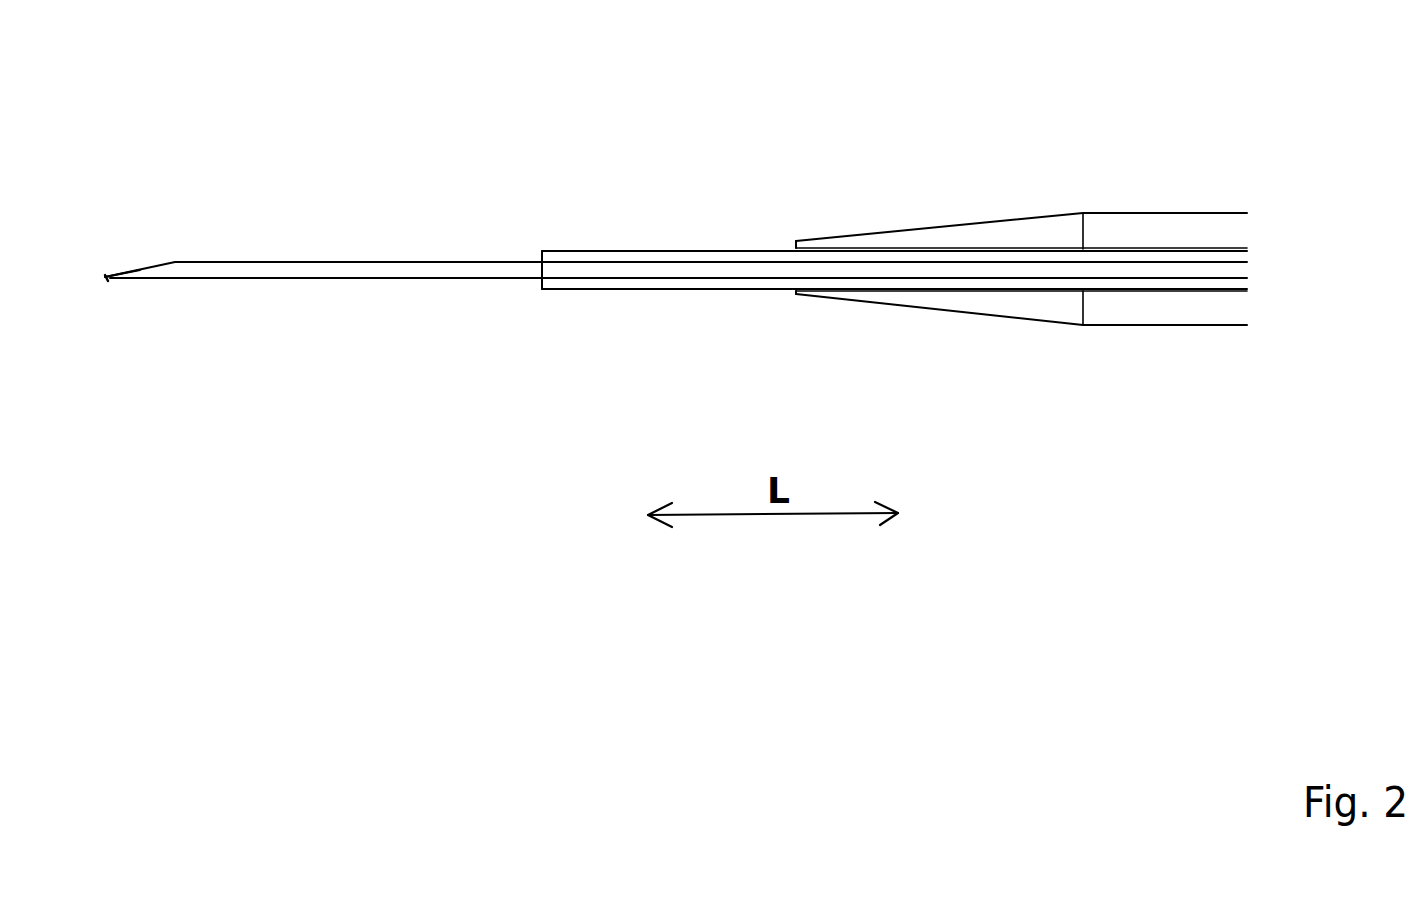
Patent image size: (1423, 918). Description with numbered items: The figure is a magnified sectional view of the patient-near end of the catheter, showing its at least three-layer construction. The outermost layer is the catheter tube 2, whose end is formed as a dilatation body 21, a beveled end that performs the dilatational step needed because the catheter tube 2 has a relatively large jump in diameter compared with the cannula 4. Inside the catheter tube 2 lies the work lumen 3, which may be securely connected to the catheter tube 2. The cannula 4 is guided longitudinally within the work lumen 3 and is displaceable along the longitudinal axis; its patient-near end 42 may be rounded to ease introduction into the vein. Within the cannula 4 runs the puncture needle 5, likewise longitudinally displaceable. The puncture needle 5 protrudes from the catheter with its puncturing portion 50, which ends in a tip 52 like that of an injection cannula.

The puncturing portion 50 is at (292, 175).
The tip 52 is at (109, 280).
The puncture needle 5 is at (373, 278).
The cannula 4 is at (939, 262).
The patient-near end of the cannula 42 is at (541, 250).
The catheter tube 2 is at (1021, 202).
The dilatation body 21 is at (987, 230).
The work lumen 3 is at (1243, 248).